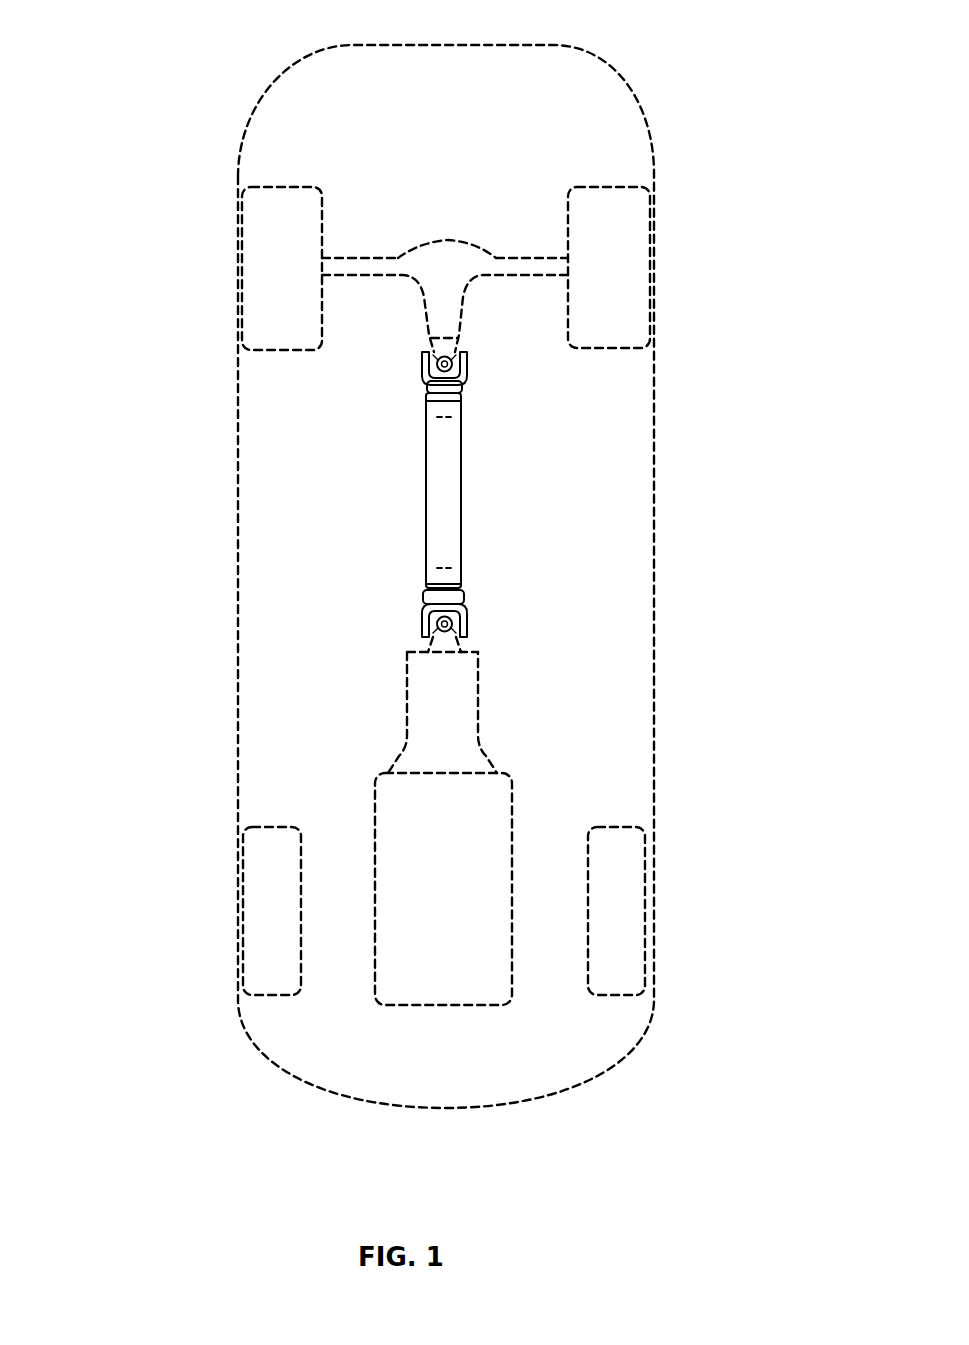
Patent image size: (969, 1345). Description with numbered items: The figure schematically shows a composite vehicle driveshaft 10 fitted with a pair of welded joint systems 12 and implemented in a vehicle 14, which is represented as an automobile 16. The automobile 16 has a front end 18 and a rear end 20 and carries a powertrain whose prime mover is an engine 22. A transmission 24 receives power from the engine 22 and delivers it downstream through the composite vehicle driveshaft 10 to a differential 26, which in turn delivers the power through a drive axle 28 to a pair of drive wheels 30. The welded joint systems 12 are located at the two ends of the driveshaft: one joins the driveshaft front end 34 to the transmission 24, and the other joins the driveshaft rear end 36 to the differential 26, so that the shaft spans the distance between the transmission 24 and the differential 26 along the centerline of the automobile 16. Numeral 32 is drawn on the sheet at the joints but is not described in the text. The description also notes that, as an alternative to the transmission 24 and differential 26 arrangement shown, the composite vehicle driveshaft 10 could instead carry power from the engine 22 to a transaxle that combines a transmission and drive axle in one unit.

The composite vehicle driveshaft 10 is at (535, 486).
The welded joint systems 12 is at (416, 390).
The vehicle 14 is at (150, 72).
The automobile 16 is at (158, 290).
The front end 18 is at (697, 1032).
The rear end 20 is at (750, 96).
The engine 22 is at (463, 920).
The transmission 24 is at (459, 719).
The differential 26 is at (452, 248).
The drive axle 28 is at (463, 200).
The drive wheels 30 is at (318, 165).
The universal joint 32 is at (480, 356).
The driveshaft front end 34 is at (416, 601).
The driveshaft rear end 36 is at (412, 362).